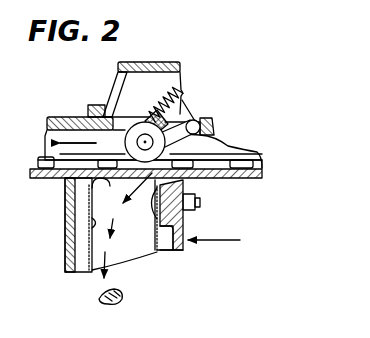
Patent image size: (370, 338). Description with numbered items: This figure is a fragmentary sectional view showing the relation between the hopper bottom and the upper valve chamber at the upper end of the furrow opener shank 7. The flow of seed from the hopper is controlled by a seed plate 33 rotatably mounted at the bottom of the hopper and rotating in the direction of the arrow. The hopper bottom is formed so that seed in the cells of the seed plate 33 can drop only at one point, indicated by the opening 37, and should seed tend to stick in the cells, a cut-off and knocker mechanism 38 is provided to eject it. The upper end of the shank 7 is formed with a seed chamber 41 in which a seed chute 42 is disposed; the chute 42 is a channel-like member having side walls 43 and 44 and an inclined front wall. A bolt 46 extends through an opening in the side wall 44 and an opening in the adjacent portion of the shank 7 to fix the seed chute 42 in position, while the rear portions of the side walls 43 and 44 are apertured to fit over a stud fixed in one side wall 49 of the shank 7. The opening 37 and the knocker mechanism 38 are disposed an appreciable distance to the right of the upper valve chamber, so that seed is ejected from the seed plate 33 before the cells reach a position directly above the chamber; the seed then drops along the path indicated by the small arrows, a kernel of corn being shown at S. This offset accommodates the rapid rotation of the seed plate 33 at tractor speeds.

The seed plate 33 is at (52, 116).
The cut-off and knocker mechanism 38 is at (185, 124).
The opening 37 is at (66, 184).
The side wall 43 is at (68, 223).
The seed chute 42 is at (82, 243).
The side wall 44 is at (153, 247).
The seed chamber 41 is at (166, 235).
The side wall 49 is at (176, 250).
The bolt 46 is at (201, 203).
The furrow opener shank 7 is at (223, 241).
The kernel of corn S is at (100, 303).